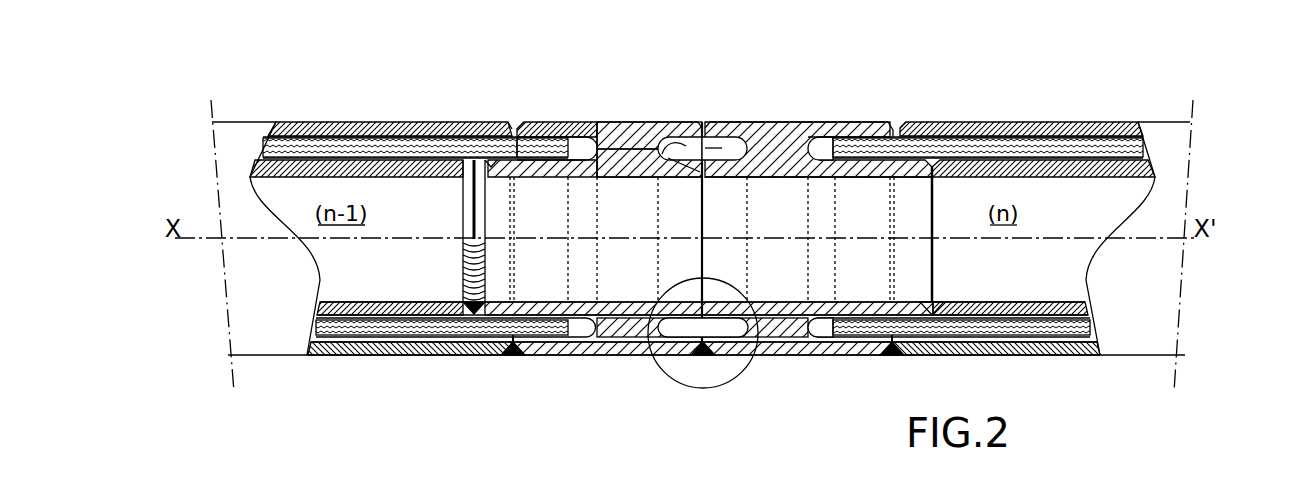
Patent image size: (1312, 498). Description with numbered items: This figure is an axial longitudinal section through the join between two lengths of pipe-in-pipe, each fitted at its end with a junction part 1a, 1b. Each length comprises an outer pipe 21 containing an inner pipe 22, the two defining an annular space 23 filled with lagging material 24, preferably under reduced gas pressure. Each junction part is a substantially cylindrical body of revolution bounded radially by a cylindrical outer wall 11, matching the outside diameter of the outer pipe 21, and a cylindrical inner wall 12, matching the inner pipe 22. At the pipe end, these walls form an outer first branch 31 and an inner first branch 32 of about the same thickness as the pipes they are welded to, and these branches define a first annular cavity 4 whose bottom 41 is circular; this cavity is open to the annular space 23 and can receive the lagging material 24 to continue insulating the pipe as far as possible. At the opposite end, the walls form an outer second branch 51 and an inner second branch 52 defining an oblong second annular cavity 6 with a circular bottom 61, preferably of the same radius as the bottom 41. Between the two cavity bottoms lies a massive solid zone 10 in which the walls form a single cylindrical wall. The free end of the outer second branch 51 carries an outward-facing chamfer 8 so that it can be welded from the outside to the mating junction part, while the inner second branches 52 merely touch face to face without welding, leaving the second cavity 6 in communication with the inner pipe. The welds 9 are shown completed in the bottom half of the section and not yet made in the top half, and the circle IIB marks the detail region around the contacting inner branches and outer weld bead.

The junction part 1a is at (822, 96).
The junction part 1b is at (611, 370).
The outer pipe 21 is at (423, 130).
The inner pipe 22 is at (425, 170).
The annular space 23 is at (338, 132).
The lagging material 24 is at (380, 150).
The chamfer 8 is at (510, 128).
The outer first branch 31 is at (540, 132).
The inner first branch 32 is at (530, 170).
The first annular cavity 4 is at (574, 150).
The bottom of first annular cavity 41 is at (590, 142).
The outer wall 11 is at (634, 130).
The inner wall 12 is at (638, 170).
The outer second branch 51 is at (680, 148).
The inner second branch 52 is at (684, 168).
The second annular cavity 6 is at (720, 150).
The bottom of second annular cavity 61 is at (666, 142).
The massive solid zone 10 is at (775, 130).
The weld 9 is at (513, 358).
The detail circle IIB is at (733, 380).